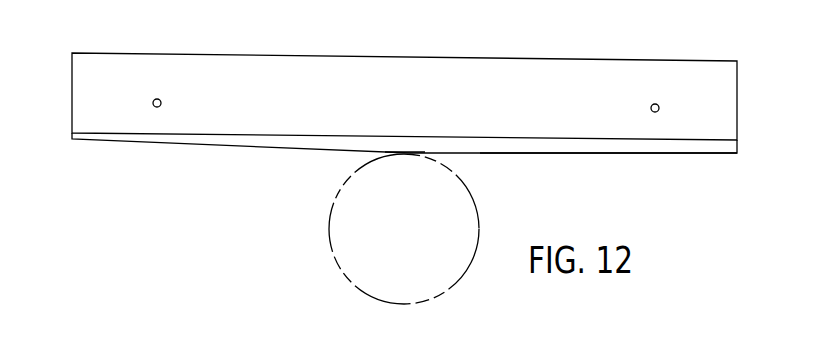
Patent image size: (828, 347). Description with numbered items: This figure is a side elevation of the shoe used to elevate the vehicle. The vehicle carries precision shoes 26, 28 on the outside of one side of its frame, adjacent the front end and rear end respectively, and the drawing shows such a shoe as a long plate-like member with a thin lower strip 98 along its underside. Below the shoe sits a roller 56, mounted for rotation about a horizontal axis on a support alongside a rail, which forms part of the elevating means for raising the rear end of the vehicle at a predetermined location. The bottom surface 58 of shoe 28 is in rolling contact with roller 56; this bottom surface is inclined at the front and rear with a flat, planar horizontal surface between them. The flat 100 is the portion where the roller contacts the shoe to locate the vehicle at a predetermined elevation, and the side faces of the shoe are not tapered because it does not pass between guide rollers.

The precision shoe 26 is at (404, 79).
The precision shoe 28 is at (560, 58).
The roller 56 is at (343, 235).
The bottom surface 58 is at (520, 152).
The resilient strip 98 is at (167, 146).
The flat 100 is at (368, 150).